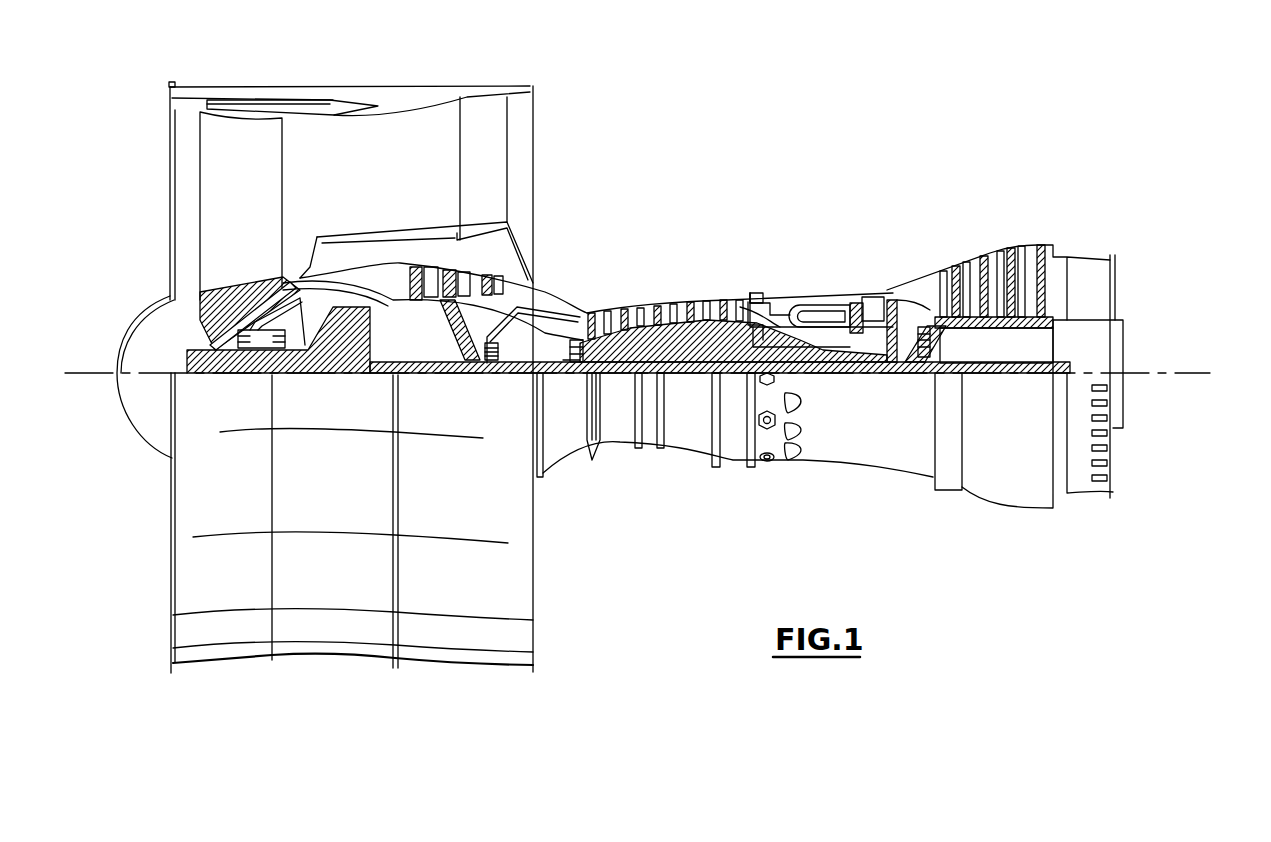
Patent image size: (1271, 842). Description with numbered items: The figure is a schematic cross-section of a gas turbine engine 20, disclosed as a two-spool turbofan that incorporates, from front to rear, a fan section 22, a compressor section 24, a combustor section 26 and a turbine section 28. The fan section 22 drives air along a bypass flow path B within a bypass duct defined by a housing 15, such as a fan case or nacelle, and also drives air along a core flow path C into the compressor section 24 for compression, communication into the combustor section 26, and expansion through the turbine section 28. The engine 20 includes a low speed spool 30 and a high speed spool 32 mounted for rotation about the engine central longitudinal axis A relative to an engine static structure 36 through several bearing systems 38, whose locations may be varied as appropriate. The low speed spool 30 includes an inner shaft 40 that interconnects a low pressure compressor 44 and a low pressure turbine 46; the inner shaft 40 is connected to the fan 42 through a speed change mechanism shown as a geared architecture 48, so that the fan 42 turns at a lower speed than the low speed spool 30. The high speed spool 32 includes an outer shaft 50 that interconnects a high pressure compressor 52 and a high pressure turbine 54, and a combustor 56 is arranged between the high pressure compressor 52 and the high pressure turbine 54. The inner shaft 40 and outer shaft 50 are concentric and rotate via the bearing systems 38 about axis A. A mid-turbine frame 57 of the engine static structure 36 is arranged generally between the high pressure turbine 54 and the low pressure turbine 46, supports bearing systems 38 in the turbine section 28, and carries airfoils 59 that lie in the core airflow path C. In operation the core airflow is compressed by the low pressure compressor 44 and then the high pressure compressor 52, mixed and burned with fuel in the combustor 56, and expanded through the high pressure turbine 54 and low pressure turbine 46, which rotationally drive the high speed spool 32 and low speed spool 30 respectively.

The housing 15 is at (353, 93).
The gas turbine engine 20 is at (820, 134).
The fan section 22 is at (280, 80).
The compressor section 24 is at (585, 275).
The combustor section 26 is at (806, 268).
The turbine section 28 is at (955, 230).
The low speed spool 30 is at (693, 384).
The high speed spool 32 is at (742, 360).
The engine static structure 36 is at (730, 466).
The bearing systems 38 is at (491, 362).
The inner shaft 40 is at (552, 375).
The fan 42 is at (257, 221).
The low pressure compressor 44 is at (455, 282).
The low pressure turbine 46 is at (1000, 250).
The geared architecture 48 is at (360, 357).
The outer shaft 50 is at (810, 352).
The high pressure compressor 52 is at (656, 347).
The high pressure turbine 54 is at (872, 295).
The combustor 56 is at (806, 313).
The mid-turbine frame 57 is at (913, 282).
The airfoils 59 is at (940, 330).